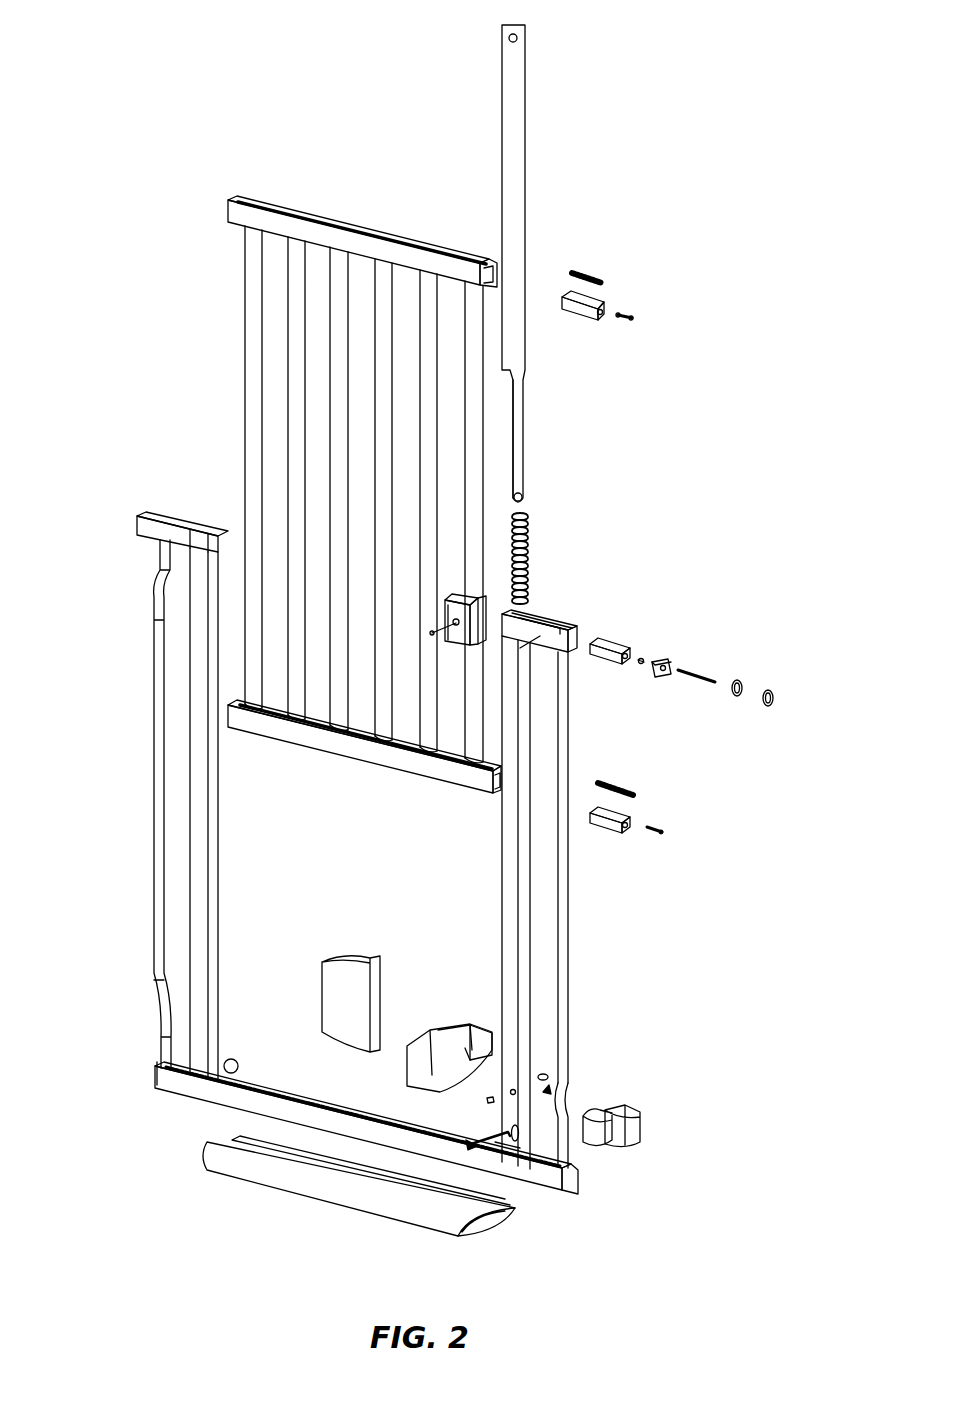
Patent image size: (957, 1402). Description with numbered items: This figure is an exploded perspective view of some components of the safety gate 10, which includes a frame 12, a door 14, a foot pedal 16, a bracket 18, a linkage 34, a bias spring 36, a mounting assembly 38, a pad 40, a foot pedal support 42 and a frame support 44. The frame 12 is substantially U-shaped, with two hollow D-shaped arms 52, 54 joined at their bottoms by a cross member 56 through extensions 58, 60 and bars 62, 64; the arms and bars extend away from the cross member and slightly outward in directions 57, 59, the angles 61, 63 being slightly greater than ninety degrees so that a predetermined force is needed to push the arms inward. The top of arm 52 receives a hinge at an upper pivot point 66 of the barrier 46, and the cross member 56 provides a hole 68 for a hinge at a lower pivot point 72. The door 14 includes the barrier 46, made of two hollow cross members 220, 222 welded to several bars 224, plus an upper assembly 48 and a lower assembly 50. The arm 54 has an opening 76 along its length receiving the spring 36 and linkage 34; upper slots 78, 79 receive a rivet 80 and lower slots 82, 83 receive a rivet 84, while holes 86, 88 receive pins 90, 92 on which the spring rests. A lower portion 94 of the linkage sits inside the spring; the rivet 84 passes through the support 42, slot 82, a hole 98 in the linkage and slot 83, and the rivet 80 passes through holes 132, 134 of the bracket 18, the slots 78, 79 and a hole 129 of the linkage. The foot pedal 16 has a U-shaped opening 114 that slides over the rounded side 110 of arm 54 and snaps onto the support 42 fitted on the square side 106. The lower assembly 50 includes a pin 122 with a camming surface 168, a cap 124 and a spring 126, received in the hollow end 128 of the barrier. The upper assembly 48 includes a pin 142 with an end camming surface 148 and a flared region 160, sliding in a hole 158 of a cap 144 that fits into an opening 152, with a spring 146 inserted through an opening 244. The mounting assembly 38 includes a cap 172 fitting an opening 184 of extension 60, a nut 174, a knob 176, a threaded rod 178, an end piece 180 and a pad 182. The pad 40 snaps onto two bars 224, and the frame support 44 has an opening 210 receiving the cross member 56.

The gate 10 is at (118, 128).
The frame 12 is at (158, 793).
The door 14 is at (393, 188).
The foot pedal 16 is at (411, 1060).
The bracket 18 is at (470, 600).
The linkage 34 is at (527, 90).
The bias spring 36 is at (530, 530).
The mounting assembly 38 is at (681, 665).
The pad 40 is at (356, 955).
The foot pedal support 42 is at (641, 1124).
The frame support 44 is at (510, 1211).
The barrier 46 is at (307, 206).
The upper assembly 48 is at (636, 294).
The lower assembly 50 is at (682, 795).
The arm 52 is at (216, 818).
The arm 54 is at (506, 876).
The cross member 56 is at (320, 1099).
The direction 57 is at (212, 508).
The extension 58 is at (168, 514).
The direction 59 is at (622, 676).
The extension 60 is at (546, 630).
The angle 61 is at (236, 1058).
The bar 62 is at (157, 880).
The angle 63 is at (500, 1132).
The bar 64 is at (571, 935).
The upper pivot point 66 is at (232, 200).
The hole 68 is at (246, 1084).
The lower pivot point 72 is at (242, 722).
The opening 76 is at (530, 614).
The upper slot 78 is at (575, 643).
The upper slot 79 is at (538, 624).
The rivet 80 is at (452, 620).
The lower slot 82 is at (511, 1128).
The lower slot 83 is at (548, 1132).
The rivet 84 is at (472, 1140).
The hole 86 is at (516, 1088).
The hole 88 is at (550, 1086).
The pin 90 is at (490, 1097).
The pin 92 is at (549, 1076).
The lower portion 94 is at (521, 438).
The hole 98 is at (523, 492).
The square side 106 is at (531, 992).
The rounded side 110 is at (528, 935).
The U-shaped opening 114 is at (456, 1036).
The pin 122 is at (655, 834).
The cap 124 is at (600, 831).
The spring 126 is at (610, 786).
The hollow end 128 is at (491, 786).
The hole 129 is at (510, 26).
The hole 132 is at (458, 630).
The hole 134 is at (480, 590).
The pin 142 is at (624, 319).
The cap 144 is at (566, 313).
The spring 146 is at (596, 274).
The end camming surface 148 is at (634, 318).
The opening 152 is at (485, 266).
The hole 158 is at (600, 302).
The flared region 160 is at (620, 320).
The camming surface 168 is at (661, 829).
The cap 172 is at (612, 640).
The nut 174 is at (645, 658).
The knob 176 is at (664, 680).
The rod 178 is at (712, 678).
The end piece 180 is at (745, 686).
The pad 182 is at (772, 706).
The opening 184 is at (596, 640).
The opening 210 is at (258, 1150).
The cross member 220 is at (392, 246).
The cross member 222 is at (326, 754).
The bars 224 is at (472, 490).
The opening 244 is at (530, 251).